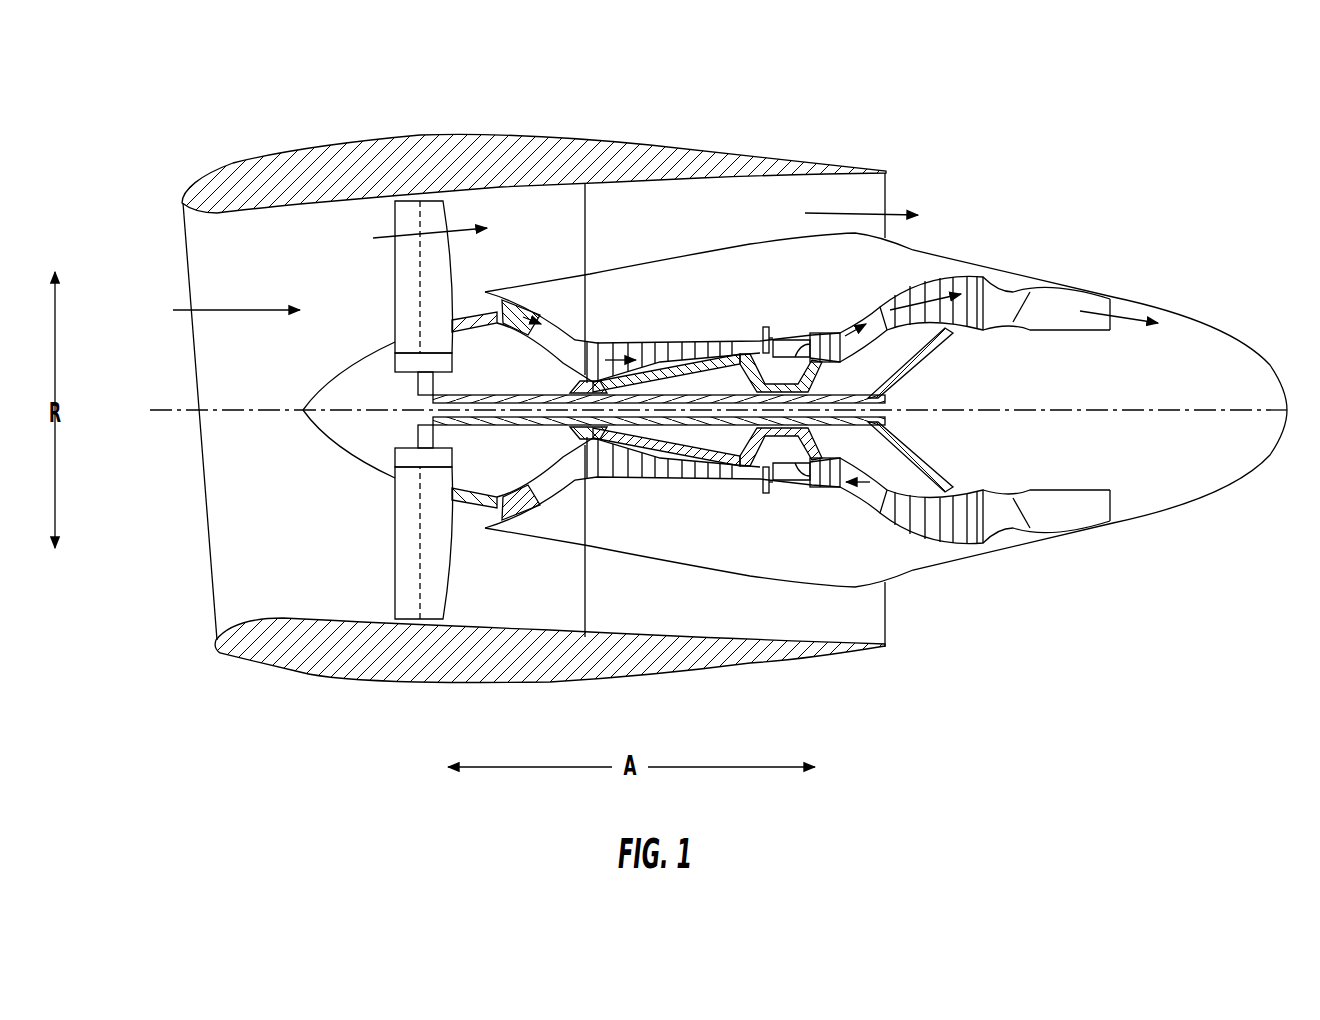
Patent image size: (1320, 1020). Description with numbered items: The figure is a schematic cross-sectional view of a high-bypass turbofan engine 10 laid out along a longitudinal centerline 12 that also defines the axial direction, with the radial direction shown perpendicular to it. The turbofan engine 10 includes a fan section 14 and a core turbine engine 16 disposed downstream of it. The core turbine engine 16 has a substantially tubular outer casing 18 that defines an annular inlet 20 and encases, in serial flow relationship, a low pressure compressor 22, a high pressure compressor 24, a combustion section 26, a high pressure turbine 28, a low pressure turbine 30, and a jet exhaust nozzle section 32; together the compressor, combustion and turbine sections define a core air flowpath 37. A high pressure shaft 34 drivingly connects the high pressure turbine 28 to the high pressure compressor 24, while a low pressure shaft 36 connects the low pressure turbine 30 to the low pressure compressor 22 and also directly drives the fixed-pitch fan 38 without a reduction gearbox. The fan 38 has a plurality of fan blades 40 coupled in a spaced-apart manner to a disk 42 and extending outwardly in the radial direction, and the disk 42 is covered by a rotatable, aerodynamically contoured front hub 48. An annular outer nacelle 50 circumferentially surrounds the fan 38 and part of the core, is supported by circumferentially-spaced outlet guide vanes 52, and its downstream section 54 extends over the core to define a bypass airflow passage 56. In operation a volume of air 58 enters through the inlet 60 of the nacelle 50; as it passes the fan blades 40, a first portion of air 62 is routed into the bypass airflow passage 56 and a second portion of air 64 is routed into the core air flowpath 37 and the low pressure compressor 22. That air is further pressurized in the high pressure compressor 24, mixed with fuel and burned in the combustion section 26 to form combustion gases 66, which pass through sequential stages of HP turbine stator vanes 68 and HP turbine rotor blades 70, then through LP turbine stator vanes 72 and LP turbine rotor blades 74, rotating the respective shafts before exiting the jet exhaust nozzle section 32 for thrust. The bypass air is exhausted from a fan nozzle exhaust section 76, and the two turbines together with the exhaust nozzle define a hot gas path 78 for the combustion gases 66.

The turbofan engine 10 is at (1031, 150).
The longitudinal centerline 12 is at (1053, 405).
The fan section 14 is at (435, 100).
The core turbine engine 16 is at (759, 300).
The outer casing 18 is at (743, 573).
The annular inlet 20 is at (487, 517).
The low pressure compressor 22 is at (546, 487).
The high pressure compressor 24 is at (614, 468).
The combustion section 26 is at (784, 476).
The high pressure turbine 28 is at (940, 463).
The low pressure turbine 30 is at (970, 538).
The jet exhaust nozzle section 32 is at (1030, 522).
The high pressure shaft 34 is at (805, 380).
The low pressure shaft 36 is at (923, 367).
The core air flowpath 37 is at (569, 486).
The fixed-pitch fan 38 is at (362, 462).
The fan blades 40 is at (390, 558).
The disk 42 is at (417, 363).
The front hub 48 is at (317, 428).
The outer nacelle 50 is at (440, 682).
The outlet guide vanes 52 is at (587, 220).
The downstream section of the nacelle 54 is at (797, 173).
The bypass airflow passage 56 is at (686, 236).
The volume of air 58 is at (233, 305).
The inlet 60 is at (213, 630).
The first portion of air 62 is at (410, 228).
The second portion of air 64 is at (480, 297).
The combustion gases 66 is at (930, 282).
The HP turbine stator vanes 68 is at (805, 475).
The HP turbine rotor blades 70 is at (890, 437).
The LP turbine stator vanes 72 is at (890, 517).
The LP turbine rotor blades 74 is at (907, 530).
The fan nozzle exhaust section 76 is at (875, 198).
The hot gas path 78 is at (877, 310).